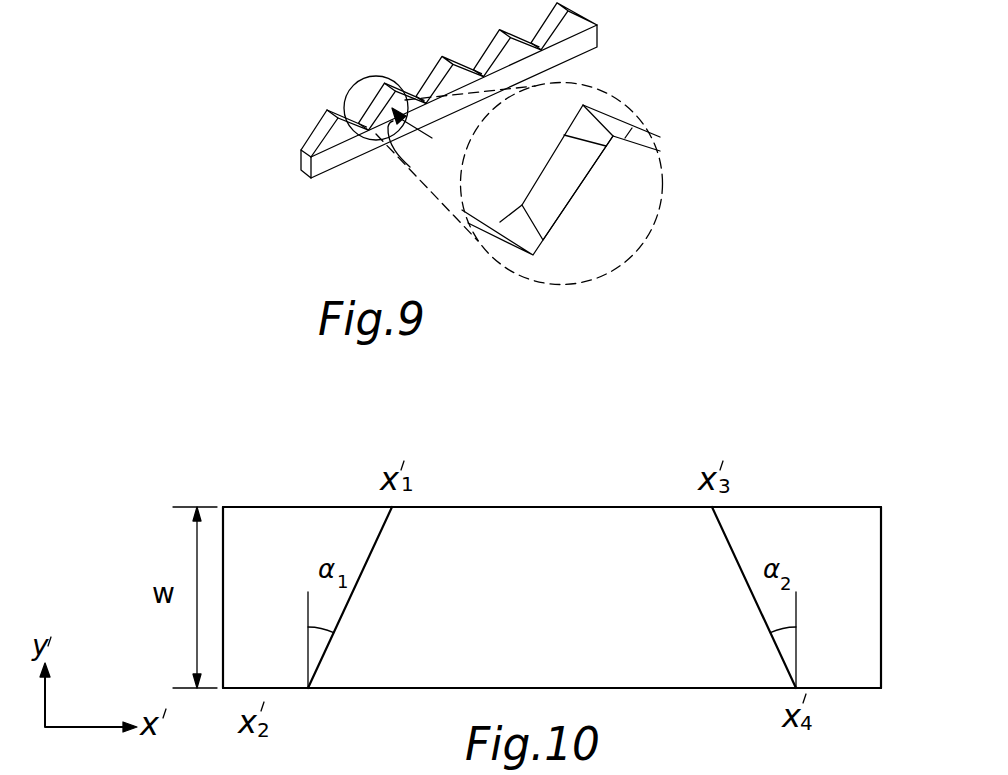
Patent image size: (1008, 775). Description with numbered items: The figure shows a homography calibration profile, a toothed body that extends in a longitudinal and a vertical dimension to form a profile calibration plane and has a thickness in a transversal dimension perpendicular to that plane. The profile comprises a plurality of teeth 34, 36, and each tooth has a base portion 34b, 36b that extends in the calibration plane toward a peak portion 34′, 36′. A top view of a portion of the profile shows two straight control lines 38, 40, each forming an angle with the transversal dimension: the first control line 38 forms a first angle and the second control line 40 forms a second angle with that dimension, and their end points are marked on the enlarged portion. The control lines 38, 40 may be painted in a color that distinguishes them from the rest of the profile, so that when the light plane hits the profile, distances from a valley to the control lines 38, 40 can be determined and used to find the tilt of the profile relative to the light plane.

In FIG. 9, the tooth 34 is at (334, 134).
In FIG. 9, the base portion 34b is at (328, 149).
In FIG. 9, the peak portion 34′ is at (330, 111).
In FIG. 9, the tooth 36 is at (424, 135).
In FIG. 9, the base portion 36b is at (419, 155).
In FIG. 9, the peak portion 36′ is at (397, 30).
In FIG. 10, the peak portion 36′ is at (920, 458).
In FIG. 9, the first control line 38 is at (530, 222).
In FIG. 10, the first control line 38 is at (370, 548).
In FIG. 9, the second control line 40 is at (586, 139).
In FIG. 10, the second control line 40 is at (732, 547).